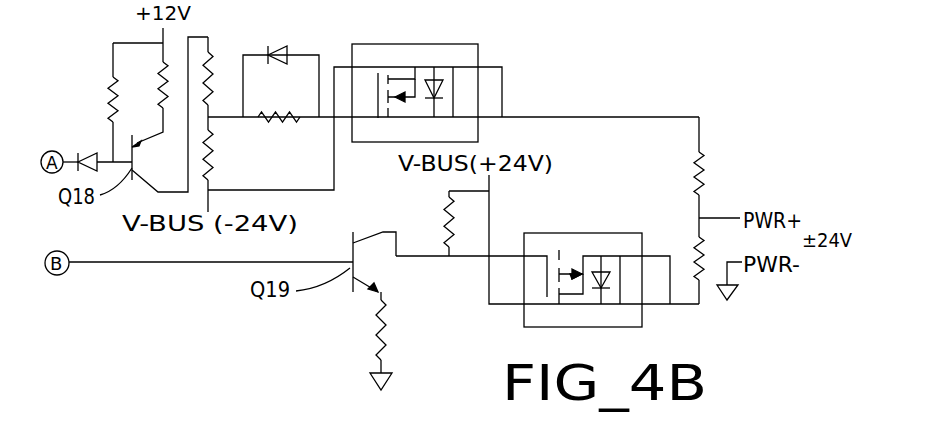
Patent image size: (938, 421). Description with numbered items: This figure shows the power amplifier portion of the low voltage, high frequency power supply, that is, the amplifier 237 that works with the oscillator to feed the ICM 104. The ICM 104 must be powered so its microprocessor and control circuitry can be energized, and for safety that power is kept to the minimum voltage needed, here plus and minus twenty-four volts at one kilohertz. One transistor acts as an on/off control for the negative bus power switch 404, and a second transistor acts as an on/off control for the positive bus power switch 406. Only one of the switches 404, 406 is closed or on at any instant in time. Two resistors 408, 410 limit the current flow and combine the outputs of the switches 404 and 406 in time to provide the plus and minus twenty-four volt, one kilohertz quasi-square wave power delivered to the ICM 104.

The amplifier 237 is at (762, 122).
The negative bus power switch 404 is at (478, 52).
The positive bus power switch 406 is at (553, 232).
The resistor 408 is at (692, 172).
The resistor 410 is at (693, 253).
The ICM 104 is at (784, 288).